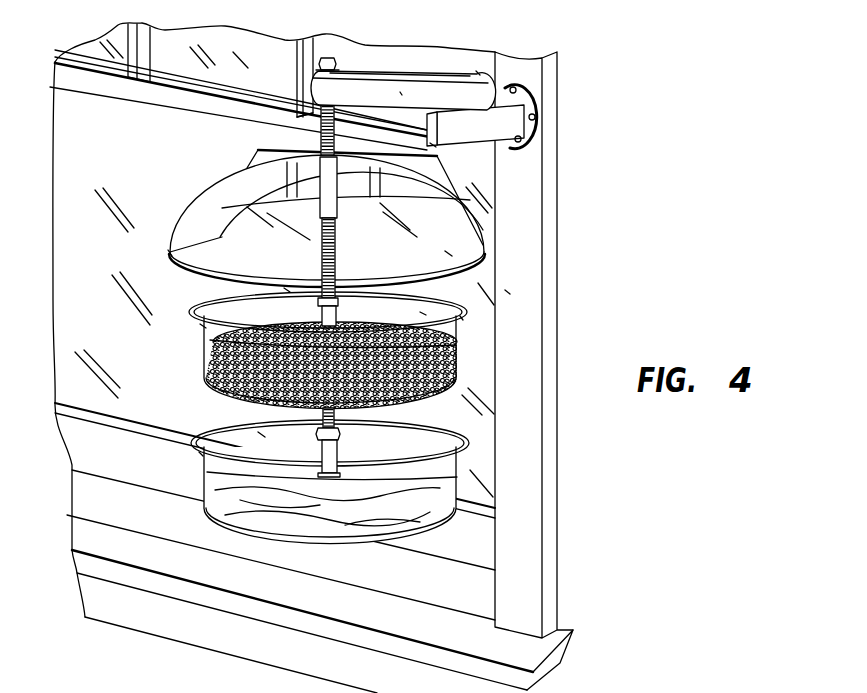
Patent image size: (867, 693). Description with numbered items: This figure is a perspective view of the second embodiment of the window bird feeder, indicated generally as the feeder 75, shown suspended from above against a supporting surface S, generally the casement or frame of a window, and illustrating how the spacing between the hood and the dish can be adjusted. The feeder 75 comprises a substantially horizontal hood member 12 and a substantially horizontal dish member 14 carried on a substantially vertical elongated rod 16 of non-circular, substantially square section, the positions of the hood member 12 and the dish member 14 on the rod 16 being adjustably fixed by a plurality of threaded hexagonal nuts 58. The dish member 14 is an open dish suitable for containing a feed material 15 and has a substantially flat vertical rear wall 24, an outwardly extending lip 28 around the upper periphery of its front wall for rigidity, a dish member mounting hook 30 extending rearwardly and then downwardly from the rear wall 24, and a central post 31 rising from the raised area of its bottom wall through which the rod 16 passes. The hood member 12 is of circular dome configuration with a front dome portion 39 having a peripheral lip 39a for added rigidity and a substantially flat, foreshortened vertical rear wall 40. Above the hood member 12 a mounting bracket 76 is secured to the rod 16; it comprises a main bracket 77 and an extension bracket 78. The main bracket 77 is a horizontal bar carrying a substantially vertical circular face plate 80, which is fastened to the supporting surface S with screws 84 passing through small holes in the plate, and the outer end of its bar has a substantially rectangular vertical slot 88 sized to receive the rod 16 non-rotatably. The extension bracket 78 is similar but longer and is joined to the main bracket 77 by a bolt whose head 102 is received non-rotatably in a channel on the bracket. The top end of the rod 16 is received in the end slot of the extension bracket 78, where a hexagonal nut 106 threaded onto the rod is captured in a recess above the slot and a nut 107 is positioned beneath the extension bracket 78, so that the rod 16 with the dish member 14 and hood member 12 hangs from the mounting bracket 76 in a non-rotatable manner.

The supporting surface S is at (537, 195).
The hood member 12 is at (466, 249).
The dish member 14 is at (472, 359).
The feed material 15 is at (203, 325).
The elongated rod 16 is at (335, 287).
The rear wall 24 is at (424, 313).
The lip 28 is at (462, 318).
The dish member mounting hook 30 is at (337, 450).
The post 31 is at (287, 290).
The front dome portion 39 is at (217, 218).
The peripheral lip 39a is at (168, 258).
The rear wall 40 is at (258, 160).
The threaded hexagonal nuts 58 is at (234, 293).
The bird feeder 75 is at (522, 292).
The mounting bracket 76 is at (455, 62).
The main bracket 77 is at (514, 125).
The extension bracket 78 is at (400, 92).
The face plate 80 is at (536, 104).
The screws 84 is at (516, 89).
The slot 88 is at (434, 146).
The bolt head 102 is at (478, 72).
The hexagonal nut 106 is at (342, 64).
The nut 107 is at (297, 119).